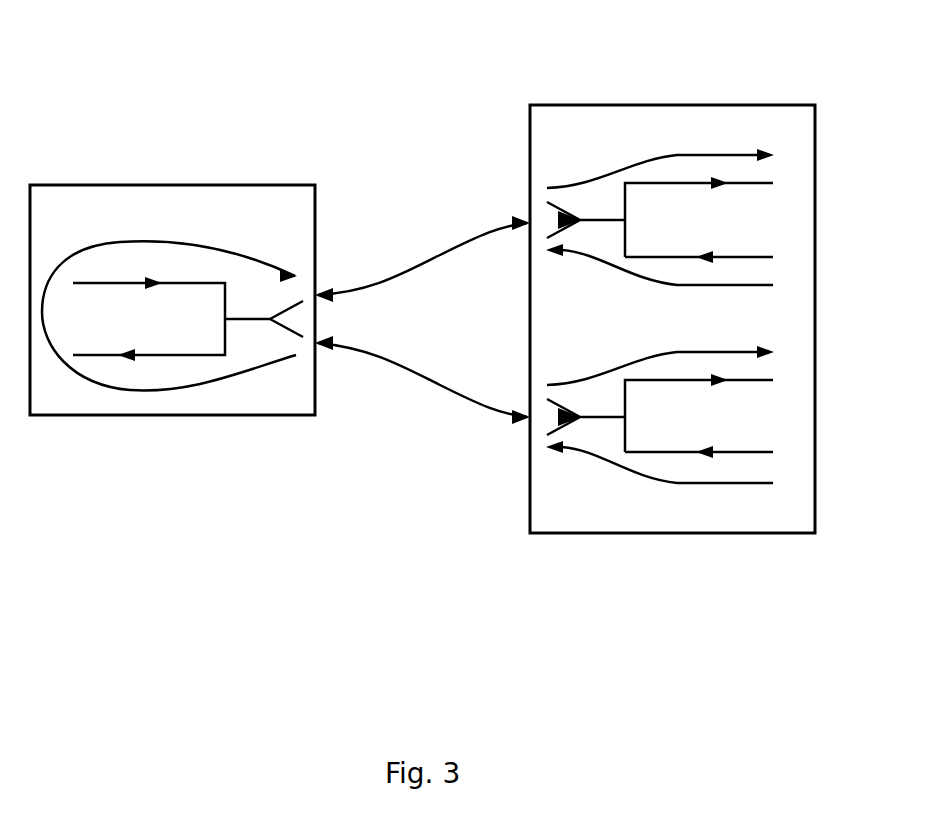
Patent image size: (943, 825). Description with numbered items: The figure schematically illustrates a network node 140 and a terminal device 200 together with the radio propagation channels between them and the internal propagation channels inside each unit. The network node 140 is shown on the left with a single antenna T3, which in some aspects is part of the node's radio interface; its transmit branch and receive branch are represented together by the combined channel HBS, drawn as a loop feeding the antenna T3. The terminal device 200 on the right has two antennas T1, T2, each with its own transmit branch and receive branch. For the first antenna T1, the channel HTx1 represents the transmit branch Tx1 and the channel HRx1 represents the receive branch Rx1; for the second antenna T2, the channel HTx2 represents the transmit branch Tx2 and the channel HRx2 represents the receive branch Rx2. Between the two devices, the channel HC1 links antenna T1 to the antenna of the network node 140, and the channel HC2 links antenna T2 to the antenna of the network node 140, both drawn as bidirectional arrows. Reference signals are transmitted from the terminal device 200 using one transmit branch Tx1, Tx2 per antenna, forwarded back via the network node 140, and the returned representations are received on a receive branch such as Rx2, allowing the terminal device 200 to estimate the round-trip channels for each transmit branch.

The network node 140 is at (233, 408).
The terminal device 200 is at (592, 533).
The antenna T1 is at (555, 403).
The antenna T2 is at (552, 206).
The antenna T3 is at (303, 302).
The transmit branch Tx1 is at (742, 452).
The receive branch Rx1 is at (673, 380).
The transmit branch Tx2 is at (656, 257).
The receive branch Rx2 is at (738, 183).
The combined channel HBS is at (169, 304).
The channel HC1 is at (422, 387).
The channel HC2 is at (422, 256).
The channel for receiver branch HRx1 is at (660, 359).
The channel for transmit branch HTx1 is at (659, 472).
The channel for receiver branch HRx2 is at (660, 164).
The channel for transmit branch HTx2 is at (659, 274).